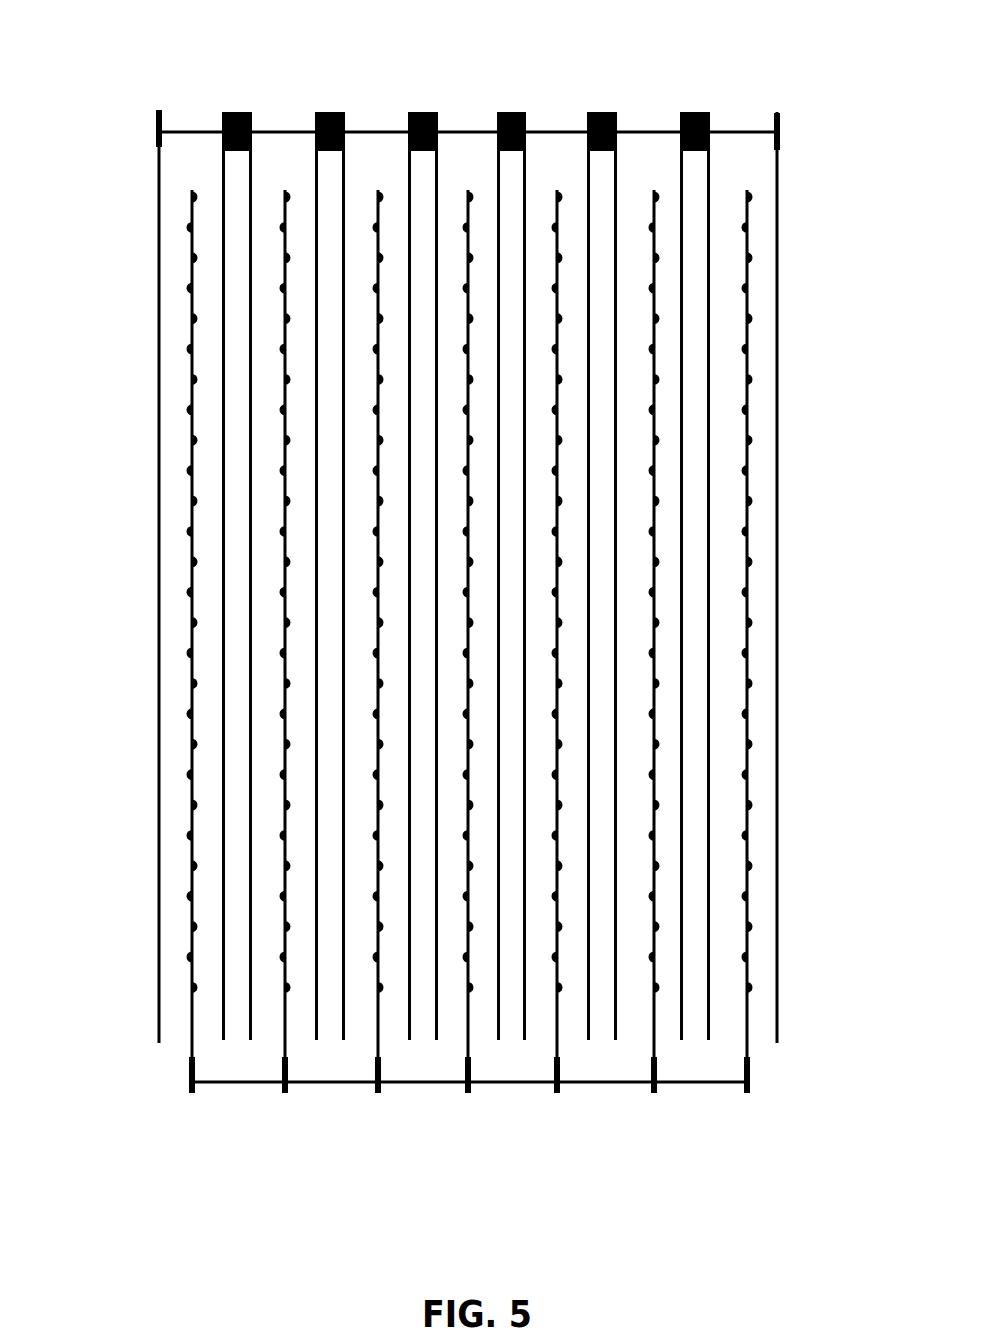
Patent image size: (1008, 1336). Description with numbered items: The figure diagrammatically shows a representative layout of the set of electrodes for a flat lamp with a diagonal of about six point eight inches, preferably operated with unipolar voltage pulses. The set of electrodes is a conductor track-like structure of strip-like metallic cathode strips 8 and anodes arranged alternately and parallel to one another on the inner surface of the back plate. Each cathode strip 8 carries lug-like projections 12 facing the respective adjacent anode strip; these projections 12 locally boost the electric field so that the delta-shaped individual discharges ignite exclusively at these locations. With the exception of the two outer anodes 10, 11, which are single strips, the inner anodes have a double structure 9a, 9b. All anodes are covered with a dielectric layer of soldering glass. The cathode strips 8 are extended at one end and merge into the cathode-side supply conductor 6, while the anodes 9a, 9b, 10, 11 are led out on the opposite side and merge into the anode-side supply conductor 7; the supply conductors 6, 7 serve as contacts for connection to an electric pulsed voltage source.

The cathode-side supply conductor 6 is at (745, 133).
The anode-side supply conductor 7 is at (716, 1082).
The cathode strip 8 is at (193, 1023).
The first part of double anode structure 9a is at (222, 185).
The second part of double anode structure 9b is at (250, 190).
The outer anode 10 is at (159, 543).
The outer anode 11 is at (778, 335).
The lug-like projection 12 is at (192, 652).